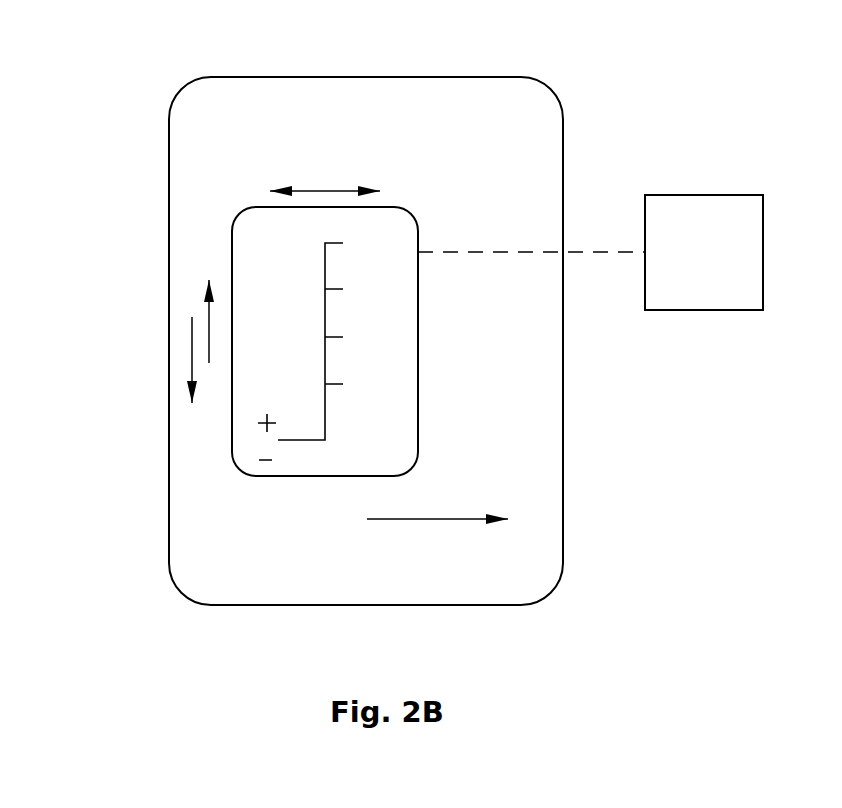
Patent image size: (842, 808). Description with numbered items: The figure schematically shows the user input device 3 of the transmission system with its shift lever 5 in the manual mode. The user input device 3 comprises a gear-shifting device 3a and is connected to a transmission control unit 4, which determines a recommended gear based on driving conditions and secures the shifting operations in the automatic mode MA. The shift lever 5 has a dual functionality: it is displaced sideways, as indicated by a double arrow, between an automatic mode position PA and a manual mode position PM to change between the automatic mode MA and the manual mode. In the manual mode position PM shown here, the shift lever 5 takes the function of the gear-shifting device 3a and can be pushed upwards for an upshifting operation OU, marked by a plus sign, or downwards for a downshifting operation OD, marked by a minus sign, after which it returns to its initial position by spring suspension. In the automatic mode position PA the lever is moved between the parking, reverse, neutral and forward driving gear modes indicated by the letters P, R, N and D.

The user input device 3 is at (322, 321).
The gear-shifting device 3a is at (223, 157).
The transmission control unit 4 is at (708, 195).
The shift lever 5 is at (230, 258).
The upshifting operation OU is at (207, 313).
The downshifting operation OD is at (190, 352).
The manual mode position PM is at (454, 112).
The automatic mode MA is at (502, 592).